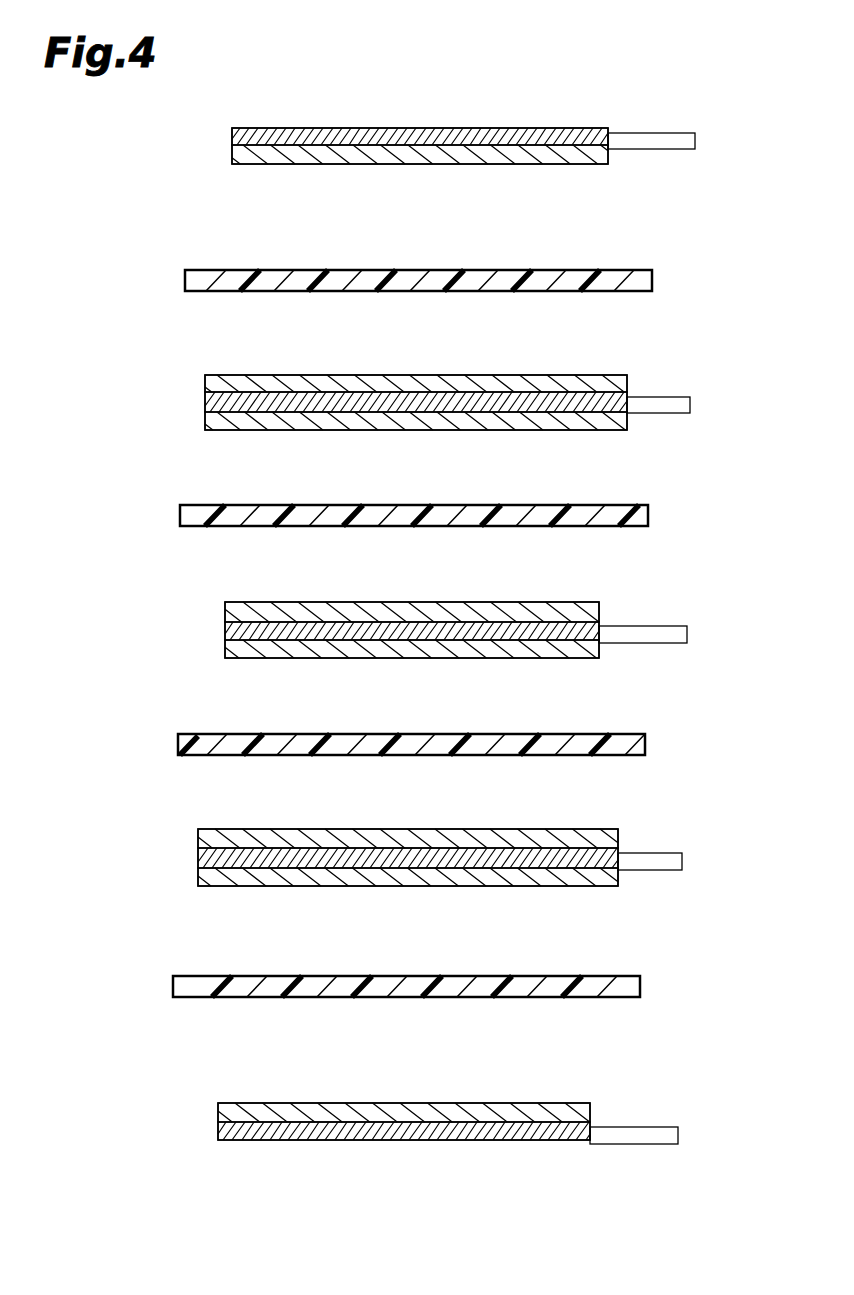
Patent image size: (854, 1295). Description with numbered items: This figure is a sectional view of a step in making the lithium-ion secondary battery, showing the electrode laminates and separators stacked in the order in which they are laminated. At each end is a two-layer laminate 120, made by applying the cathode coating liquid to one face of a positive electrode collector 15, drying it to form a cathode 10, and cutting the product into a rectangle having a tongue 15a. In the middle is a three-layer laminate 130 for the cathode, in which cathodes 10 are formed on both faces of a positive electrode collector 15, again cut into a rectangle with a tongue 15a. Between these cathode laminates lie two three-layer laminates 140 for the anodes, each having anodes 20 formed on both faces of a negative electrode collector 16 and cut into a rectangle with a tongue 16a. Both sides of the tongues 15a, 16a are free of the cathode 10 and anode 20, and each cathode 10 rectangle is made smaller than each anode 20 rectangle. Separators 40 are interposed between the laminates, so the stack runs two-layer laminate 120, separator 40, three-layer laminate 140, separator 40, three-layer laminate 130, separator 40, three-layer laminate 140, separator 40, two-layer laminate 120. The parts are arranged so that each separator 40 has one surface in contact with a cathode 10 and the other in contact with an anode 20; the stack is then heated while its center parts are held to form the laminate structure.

The cathode 10 is at (245, 152).
The positive electrode collector 15 is at (238, 137).
The tongue 15a is at (695, 141).
The negative electrode collector 16 is at (212, 402).
The tongue 16a is at (690, 405).
The anode 20 is at (215, 385).
The separator 40 is at (185, 281).
The 2-layer laminate 120 is at (150, 123).
The 3-layer laminate 130 is at (148, 598).
The 3-layer laminate 140 is at (150, 370).